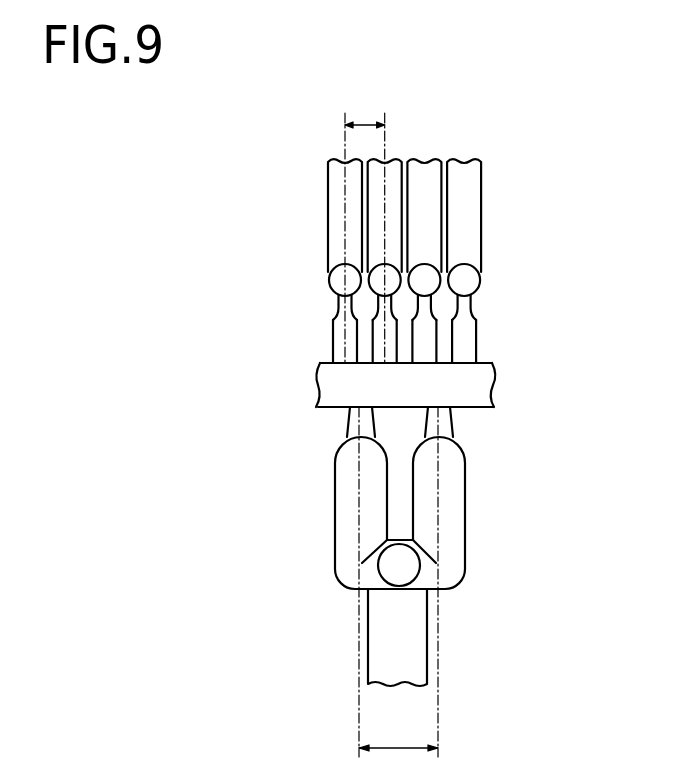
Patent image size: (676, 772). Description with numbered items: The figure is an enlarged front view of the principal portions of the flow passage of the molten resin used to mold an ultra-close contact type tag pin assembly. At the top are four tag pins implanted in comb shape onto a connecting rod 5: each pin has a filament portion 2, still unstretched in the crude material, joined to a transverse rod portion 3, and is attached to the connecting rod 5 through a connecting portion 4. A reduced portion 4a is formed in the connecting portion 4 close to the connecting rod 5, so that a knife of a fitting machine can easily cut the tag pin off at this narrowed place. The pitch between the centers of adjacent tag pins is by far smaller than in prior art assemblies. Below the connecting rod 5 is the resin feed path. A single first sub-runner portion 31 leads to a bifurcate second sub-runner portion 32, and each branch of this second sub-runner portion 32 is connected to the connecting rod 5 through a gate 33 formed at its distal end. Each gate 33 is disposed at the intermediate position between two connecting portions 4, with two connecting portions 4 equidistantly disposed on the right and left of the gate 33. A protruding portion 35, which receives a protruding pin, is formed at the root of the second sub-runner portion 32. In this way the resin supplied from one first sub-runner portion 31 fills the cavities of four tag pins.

The filament portion 2 is at (473, 200).
The transverse rod portion 3 is at (470, 277).
The reduced portion 4a is at (470, 303).
The connecting portion 4 is at (467, 340).
The connecting rod 5 is at (482, 390).
The gate 33 is at (447, 427).
The second sub-runner portion 32 is at (458, 517).
The protruding portion 35 is at (400, 565).
The first sub-runner portion 31 is at (417, 640).